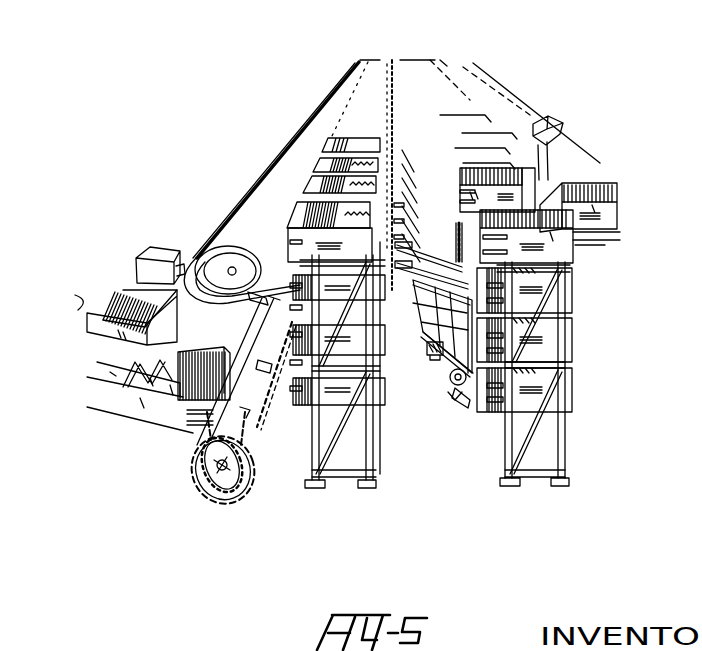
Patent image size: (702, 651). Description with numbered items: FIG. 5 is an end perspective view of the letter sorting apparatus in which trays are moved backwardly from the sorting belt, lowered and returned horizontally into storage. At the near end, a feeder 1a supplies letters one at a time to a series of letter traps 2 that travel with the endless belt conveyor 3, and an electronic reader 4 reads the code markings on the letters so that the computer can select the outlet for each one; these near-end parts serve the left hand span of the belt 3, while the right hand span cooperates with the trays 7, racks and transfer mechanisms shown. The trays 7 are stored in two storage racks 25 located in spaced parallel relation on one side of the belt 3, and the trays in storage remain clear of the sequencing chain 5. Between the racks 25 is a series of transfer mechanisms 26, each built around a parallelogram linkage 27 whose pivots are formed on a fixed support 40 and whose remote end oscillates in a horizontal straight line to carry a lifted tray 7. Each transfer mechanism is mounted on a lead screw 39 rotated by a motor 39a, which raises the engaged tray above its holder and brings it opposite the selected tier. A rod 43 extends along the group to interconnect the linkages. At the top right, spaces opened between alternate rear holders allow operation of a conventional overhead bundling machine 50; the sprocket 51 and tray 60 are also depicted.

The letter feeder 1a is at (115, 302).
The letter traps 2 is at (243, 193).
The endless belt conveyor 3 is at (265, 172).
The electronic reader 4 is at (155, 250).
The sequencing chain 5 is at (192, 460).
The trays 7 is at (604, 206).
The storage racks 25 is at (311, 440).
The transfer mechanisms 26 is at (467, 410).
The parallelogram linkage 27 is at (418, 286).
The lead screw 39 is at (457, 233).
The motor 39a is at (455, 398).
The fixed support 40 is at (447, 322).
The rod 43 is at (427, 320).
The overhead bundling machine 50 is at (550, 120).
The drive chain 51 is at (264, 432).
The tray with fins 60 is at (180, 420).